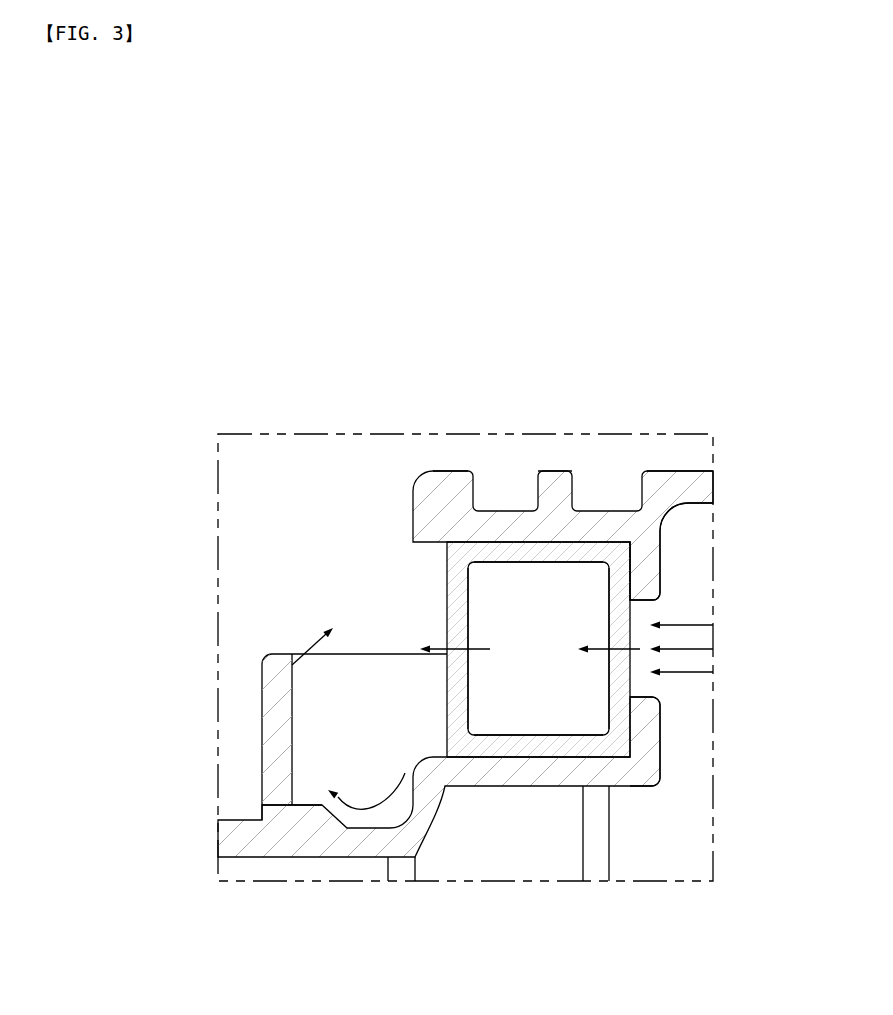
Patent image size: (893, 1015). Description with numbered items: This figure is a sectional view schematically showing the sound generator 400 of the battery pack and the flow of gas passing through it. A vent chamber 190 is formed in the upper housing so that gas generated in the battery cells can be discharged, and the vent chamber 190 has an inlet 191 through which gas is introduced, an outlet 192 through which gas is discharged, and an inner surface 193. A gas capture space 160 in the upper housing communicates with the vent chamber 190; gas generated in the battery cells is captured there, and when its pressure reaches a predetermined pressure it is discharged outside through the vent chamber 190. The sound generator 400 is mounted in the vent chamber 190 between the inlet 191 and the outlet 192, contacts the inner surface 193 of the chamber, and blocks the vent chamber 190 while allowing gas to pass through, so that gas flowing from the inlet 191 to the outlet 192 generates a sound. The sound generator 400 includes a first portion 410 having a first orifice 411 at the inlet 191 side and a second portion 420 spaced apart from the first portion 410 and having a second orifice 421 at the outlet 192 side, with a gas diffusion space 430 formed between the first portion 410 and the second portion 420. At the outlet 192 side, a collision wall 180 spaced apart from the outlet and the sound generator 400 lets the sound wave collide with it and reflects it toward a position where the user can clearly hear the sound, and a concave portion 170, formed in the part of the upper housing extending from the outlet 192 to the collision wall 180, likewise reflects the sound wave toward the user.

The gas capture space 160 is at (692, 548).
The concave portion 170 is at (378, 822).
The collision wall 180 is at (277, 692).
The vent chamber 190 is at (588, 770).
The inlet 191 is at (663, 601).
The outlet 192 is at (432, 541).
The inner surface 193 is at (523, 542).
The sound generator 400 is at (434, 592).
The first portion 410 is at (617, 743).
The first orifice 411 is at (623, 657).
The second portion 420 is at (458, 703).
The second orifice 421 is at (292, 665).
The gas diffusion space 430 is at (533, 712).